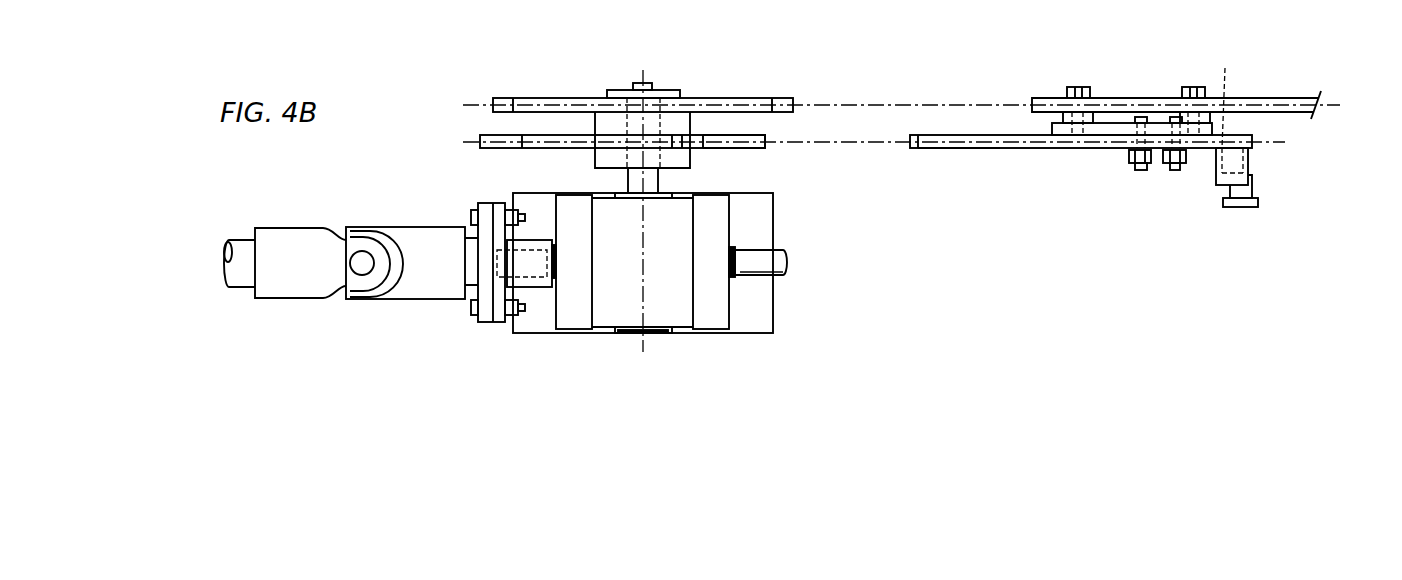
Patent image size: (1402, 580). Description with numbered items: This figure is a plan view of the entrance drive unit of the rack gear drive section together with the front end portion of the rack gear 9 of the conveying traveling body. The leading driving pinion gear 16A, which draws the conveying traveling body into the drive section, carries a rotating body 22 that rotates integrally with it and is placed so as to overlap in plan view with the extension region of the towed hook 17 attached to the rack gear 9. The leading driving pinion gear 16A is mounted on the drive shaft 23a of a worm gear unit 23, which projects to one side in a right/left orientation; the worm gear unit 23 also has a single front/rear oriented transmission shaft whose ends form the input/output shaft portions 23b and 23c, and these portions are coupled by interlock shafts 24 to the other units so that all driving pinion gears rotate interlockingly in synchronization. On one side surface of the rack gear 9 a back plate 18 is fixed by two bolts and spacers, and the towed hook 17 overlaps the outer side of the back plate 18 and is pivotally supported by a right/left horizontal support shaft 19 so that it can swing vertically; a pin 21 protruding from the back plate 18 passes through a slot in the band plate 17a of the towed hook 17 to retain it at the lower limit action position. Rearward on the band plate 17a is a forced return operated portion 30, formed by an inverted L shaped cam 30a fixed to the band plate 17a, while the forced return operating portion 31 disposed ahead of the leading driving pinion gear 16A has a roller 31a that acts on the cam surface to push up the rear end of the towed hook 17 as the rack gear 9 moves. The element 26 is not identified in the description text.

The rack gear 9 is at (1270, 102).
The leading driving pinion gear 16A is at (567, 104).
The towed hook 17 is at (962, 132).
The band plate 17a is at (995, 148).
The back plate 18 is at (1110, 128).
The support shaft 19 is at (1175, 167).
The pin 21 is at (1140, 167).
The rotating body 22 is at (725, 138).
The worm gear unit 23 is at (663, 295).
The drive shaft 23a is at (652, 182).
The input/output shaft portion 23b is at (533, 267).
The input/output shaft portion 23c is at (777, 263).
The interlock shaft 24 is at (237, 268).
The pivot pin plate 26 is at (485, 133).
The forced return operated portion 30 is at (1254, 163).
The cam 30a is at (1223, 99).
The forced return operating portion 31 is at (1260, 187).
The roller 31a is at (1240, 195).